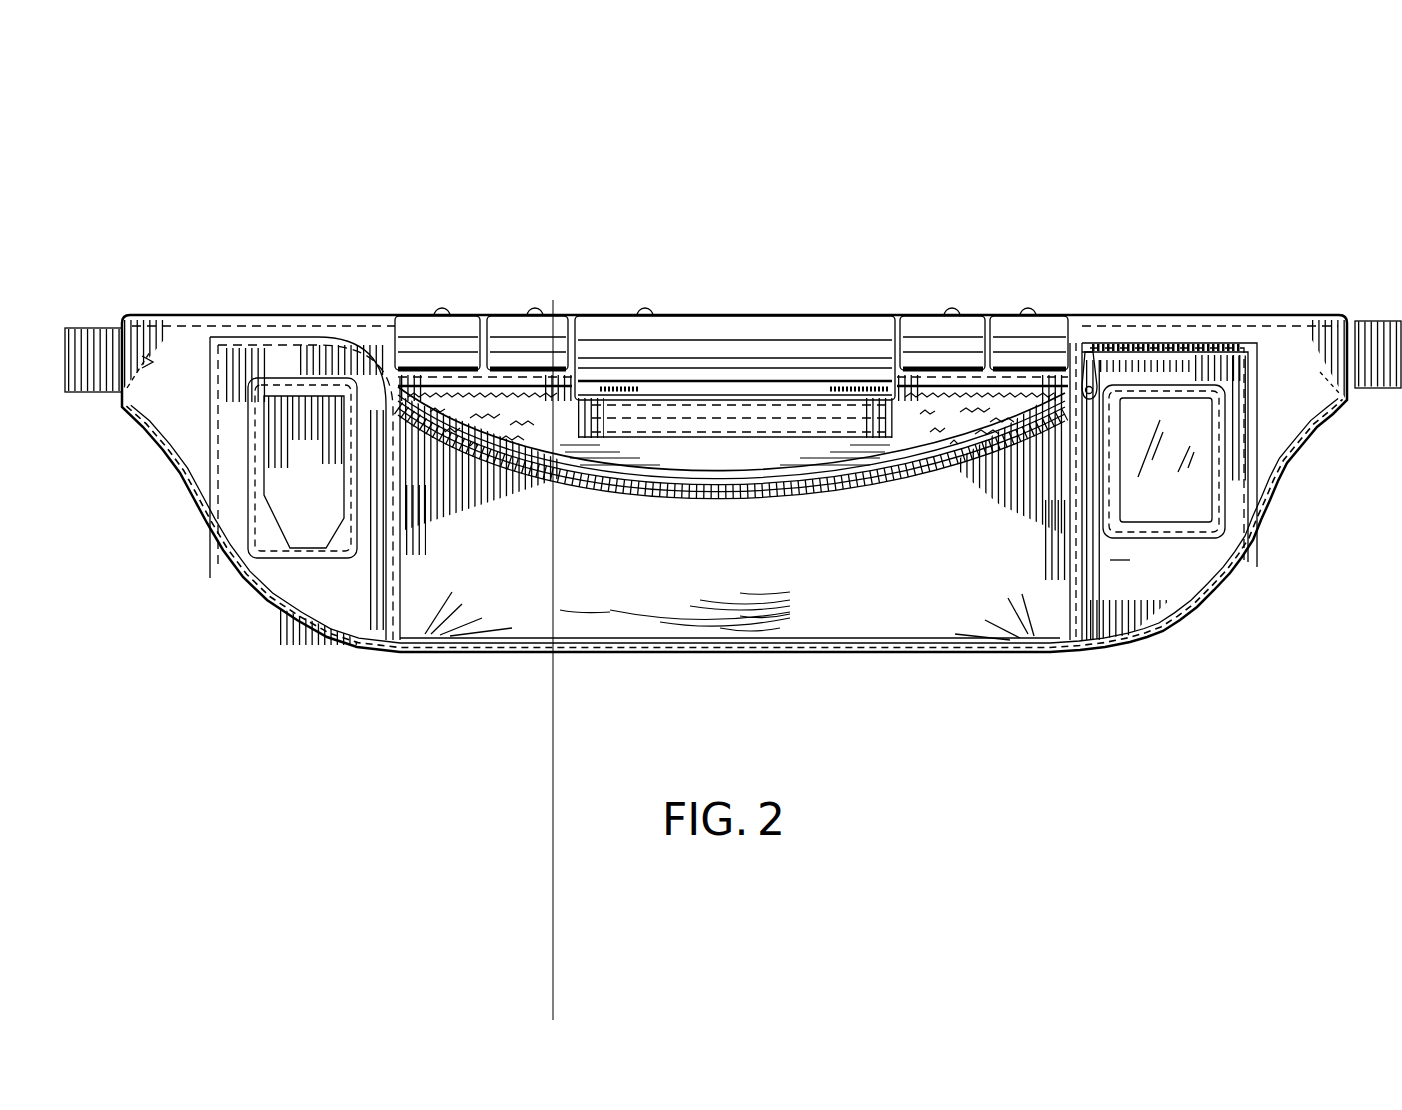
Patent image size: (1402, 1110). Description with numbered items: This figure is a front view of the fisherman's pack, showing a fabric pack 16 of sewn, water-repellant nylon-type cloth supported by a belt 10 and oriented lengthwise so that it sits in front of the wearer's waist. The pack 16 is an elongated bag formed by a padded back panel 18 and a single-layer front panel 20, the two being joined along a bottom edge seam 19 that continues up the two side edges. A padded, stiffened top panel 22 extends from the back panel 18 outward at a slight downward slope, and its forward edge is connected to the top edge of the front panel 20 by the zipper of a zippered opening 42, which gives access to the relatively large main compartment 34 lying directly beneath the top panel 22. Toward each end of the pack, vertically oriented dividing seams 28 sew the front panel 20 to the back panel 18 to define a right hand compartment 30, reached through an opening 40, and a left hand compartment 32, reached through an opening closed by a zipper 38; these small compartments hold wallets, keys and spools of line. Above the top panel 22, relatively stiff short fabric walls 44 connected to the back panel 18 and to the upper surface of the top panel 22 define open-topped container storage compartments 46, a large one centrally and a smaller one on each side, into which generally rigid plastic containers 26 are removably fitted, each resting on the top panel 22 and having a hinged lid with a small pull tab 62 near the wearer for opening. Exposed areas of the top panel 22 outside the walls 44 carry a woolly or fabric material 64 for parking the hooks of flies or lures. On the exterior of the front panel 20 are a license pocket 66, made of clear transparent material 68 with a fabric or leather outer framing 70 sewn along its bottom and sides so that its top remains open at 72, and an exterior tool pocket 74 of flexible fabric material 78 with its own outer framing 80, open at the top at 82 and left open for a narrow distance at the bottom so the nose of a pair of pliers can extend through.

The belt 10 is at (88, 326).
The fabric pack 16 is at (1160, 228).
The back panel 18 is at (372, 316).
The bottom edge seam 19 is at (1020, 654).
The front panel 20 is at (493, 608).
The top panel 22 is at (730, 452).
The rigid containers 26 is at (412, 318).
The dividing seams 28 is at (371, 645).
The right hand compartment 30 is at (240, 360).
The left hand compartment 32 is at (1188, 370).
The main compartment 34 is at (853, 585).
The zipper 38 is at (1092, 343).
The opening 40 is at (323, 330).
The zippered opening 42 is at (897, 483).
The fabric walls 44 is at (760, 335).
The container storage compartments 46 is at (447, 306).
The pull tab 62 is at (645, 306).
The woolly or fabric material 64 is at (518, 440).
The pocket 66 is at (1192, 432).
The transparent material 68 is at (1195, 482).
The outer framing 70 is at (1167, 539).
The opening 72 is at (1140, 378).
The exterior pocket 74 is at (275, 488).
The flexible fabric material 78 is at (300, 520).
The outer framing 80 is at (307, 548).
The opening 82 is at (298, 380).